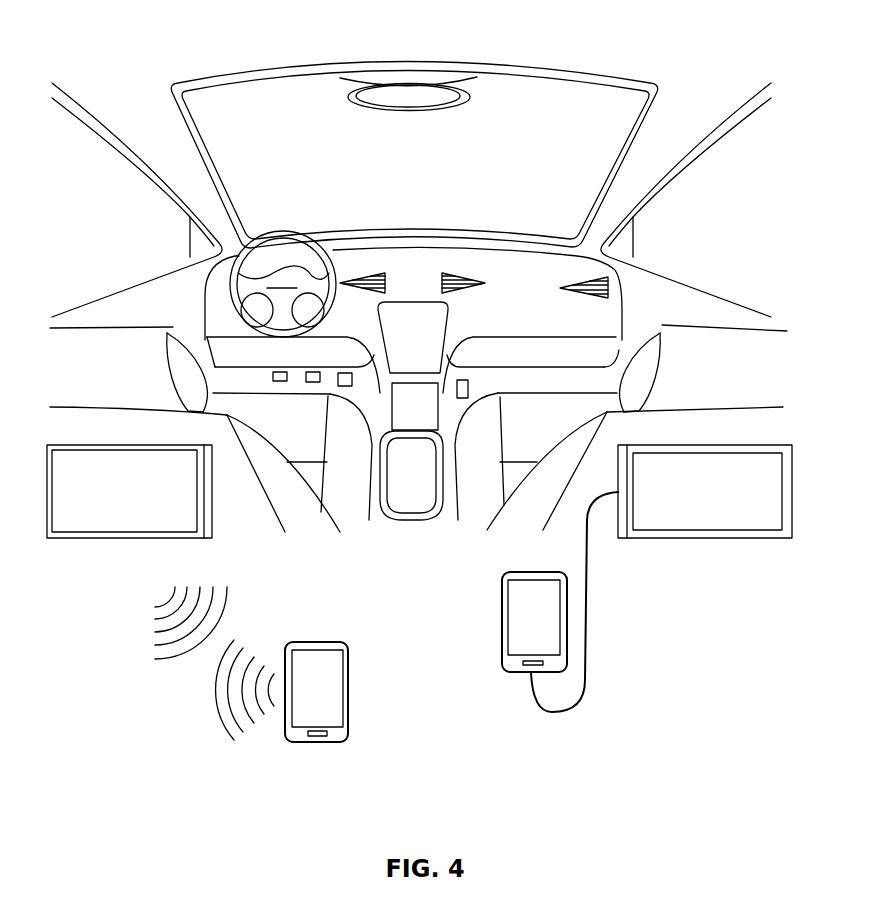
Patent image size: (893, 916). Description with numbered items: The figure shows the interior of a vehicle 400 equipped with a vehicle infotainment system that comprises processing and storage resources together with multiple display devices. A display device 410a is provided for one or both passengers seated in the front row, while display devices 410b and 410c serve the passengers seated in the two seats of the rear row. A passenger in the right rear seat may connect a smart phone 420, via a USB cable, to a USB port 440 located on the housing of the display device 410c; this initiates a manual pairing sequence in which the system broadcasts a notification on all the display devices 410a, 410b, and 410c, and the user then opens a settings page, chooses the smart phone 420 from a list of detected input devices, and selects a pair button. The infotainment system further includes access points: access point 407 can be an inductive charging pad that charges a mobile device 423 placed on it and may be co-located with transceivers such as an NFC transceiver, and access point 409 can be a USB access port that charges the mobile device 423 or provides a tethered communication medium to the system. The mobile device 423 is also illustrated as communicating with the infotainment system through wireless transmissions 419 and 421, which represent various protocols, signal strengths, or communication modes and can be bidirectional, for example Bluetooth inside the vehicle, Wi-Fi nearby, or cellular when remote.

The vehicle 400 is at (379, 30).
The access point 407 is at (410, 493).
The access point 409 is at (468, 390).
The display device 410a is at (388, 343).
The display device 410b is at (140, 505).
The display device 410c is at (707, 492).
The wireless transmissions 419 is at (160, 660).
The smart phone 420 is at (500, 607).
The wireless transmissions 421 is at (233, 738).
The mobile device 423 is at (348, 692).
The USB port 440 is at (603, 513).